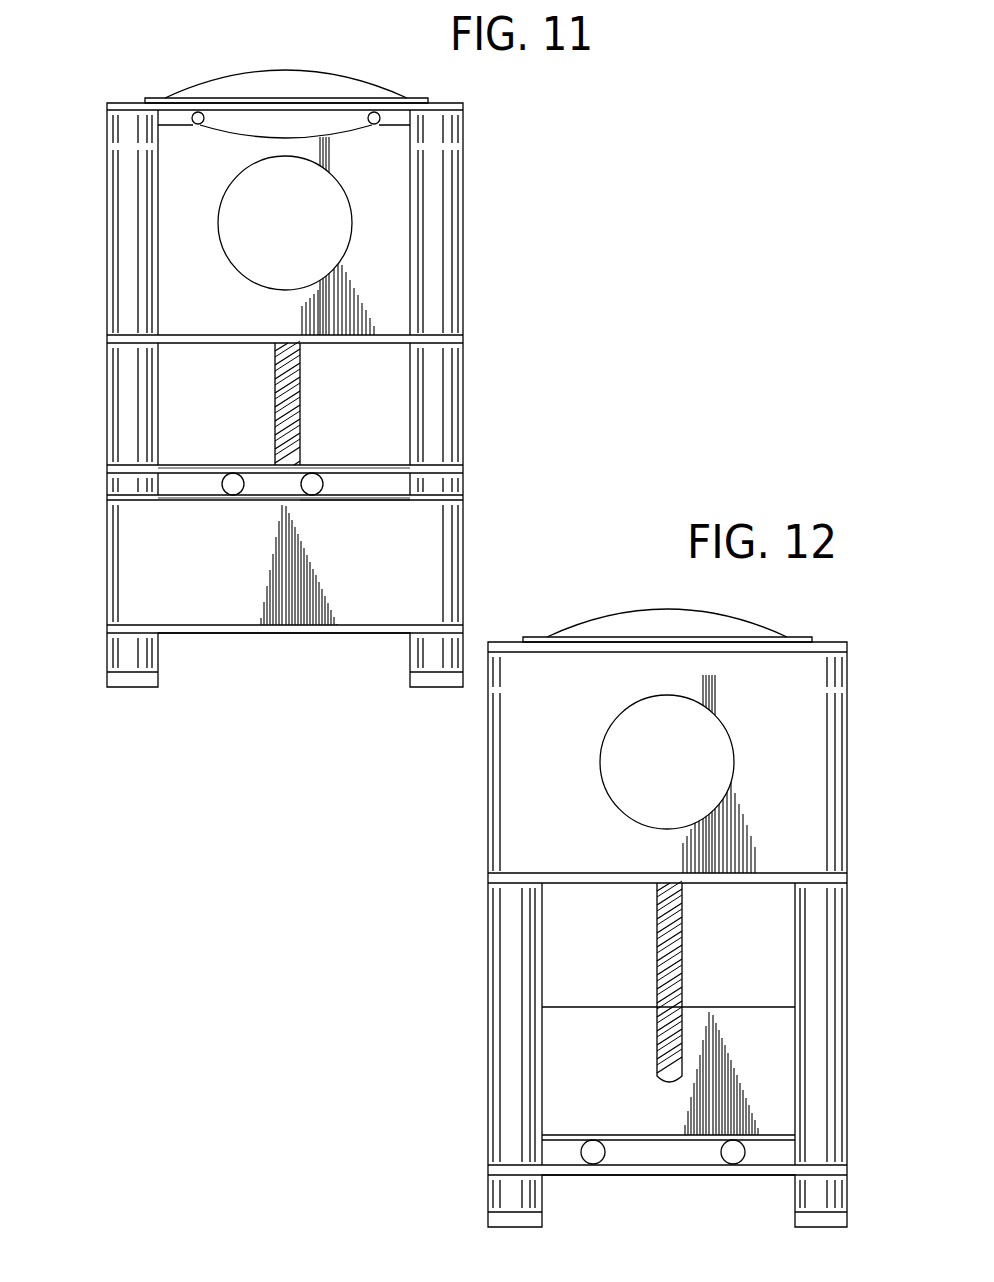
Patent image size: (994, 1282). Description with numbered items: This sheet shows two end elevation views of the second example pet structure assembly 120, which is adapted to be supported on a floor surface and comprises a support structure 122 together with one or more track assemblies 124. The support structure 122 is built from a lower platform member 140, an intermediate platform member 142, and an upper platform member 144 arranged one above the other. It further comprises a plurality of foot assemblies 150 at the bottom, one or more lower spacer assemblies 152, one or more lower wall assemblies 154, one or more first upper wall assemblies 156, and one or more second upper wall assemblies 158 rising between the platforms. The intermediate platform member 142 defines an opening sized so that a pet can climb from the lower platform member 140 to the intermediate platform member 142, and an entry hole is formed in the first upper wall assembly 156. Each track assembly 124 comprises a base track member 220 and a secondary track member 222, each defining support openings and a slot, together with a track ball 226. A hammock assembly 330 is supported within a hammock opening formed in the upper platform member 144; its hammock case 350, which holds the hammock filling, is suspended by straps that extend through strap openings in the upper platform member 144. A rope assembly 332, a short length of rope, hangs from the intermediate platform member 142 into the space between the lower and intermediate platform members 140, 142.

In FIG. 11, the pet structure assembly 120 is at (105, 65).
In FIG. 12, the pet structure assembly 120 is at (435, 1070).
In FIG. 11, the support structure 122 is at (102, 113).
In FIG. 12, the support structure 122 is at (470, 1105).
In FIG. 11, the track assembly 124 is at (338, 503).
In FIG. 12, the track assembly 124 is at (608, 1130).
In FIG. 11, the lower platform member 140 is at (253, 628).
In FIG. 12, the lower platform member 140 is at (708, 1173).
In FIG. 11, the intermediate platform member 142 is at (235, 338).
In FIG. 12, the intermediate platform member 142 is at (578, 878).
In FIG. 11, the upper platform member 144 is at (458, 107).
In FIG. 12, the upper platform member 144 is at (820, 647).
In FIG. 11, the foot assemblies 150 is at (105, 662).
In FIG. 12, the foot assemblies 150 is at (487, 1195).
In FIG. 12, the lower spacer assemblies 152 is at (487, 1015).
In FIG. 11, the lower wall assemblies 154 is at (105, 390).
In FIG. 12, the lower wall assemblies 154 is at (618, 1003).
In FIG. 11, the first upper wall assembly 156 is at (390, 208).
In FIG. 12, the first upper wall assembly 156 is at (850, 737).
In FIG. 11, the second upper wall assembly 158 is at (105, 202).
In FIG. 11, the base track member 220 is at (188, 498).
In FIG. 12, the base track member 220 is at (637, 1166).
In FIG. 11, the secondary track member 222 is at (192, 466).
In FIG. 12, the secondary track member 222 is at (632, 1135).
In FIG. 11, the track ball 226 is at (233, 478).
In FIG. 12, the track ball 226 is at (591, 1156).
In FIG. 11, the hammock assembly 330 is at (222, 72).
In FIG. 12, the hammock assembly 330 is at (610, 612).
In FIG. 11, the rope assembly 332 is at (276, 380).
In FIG. 12, the rope assembly 332 is at (656, 925).
In FIG. 11, the hammock case 350 is at (287, 80).
In FIG. 12, the hammock case 350 is at (717, 625).